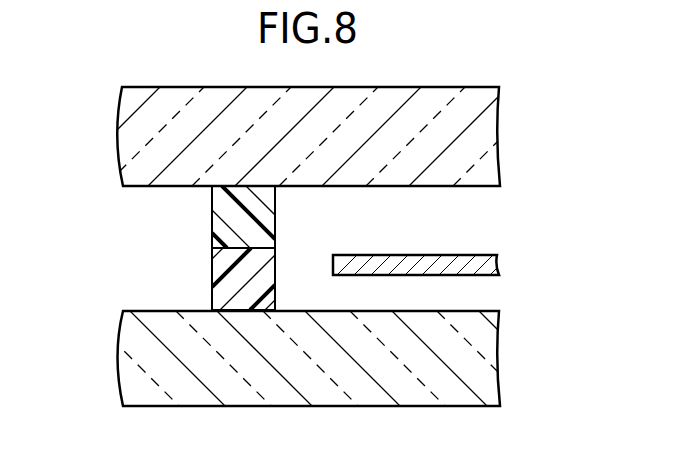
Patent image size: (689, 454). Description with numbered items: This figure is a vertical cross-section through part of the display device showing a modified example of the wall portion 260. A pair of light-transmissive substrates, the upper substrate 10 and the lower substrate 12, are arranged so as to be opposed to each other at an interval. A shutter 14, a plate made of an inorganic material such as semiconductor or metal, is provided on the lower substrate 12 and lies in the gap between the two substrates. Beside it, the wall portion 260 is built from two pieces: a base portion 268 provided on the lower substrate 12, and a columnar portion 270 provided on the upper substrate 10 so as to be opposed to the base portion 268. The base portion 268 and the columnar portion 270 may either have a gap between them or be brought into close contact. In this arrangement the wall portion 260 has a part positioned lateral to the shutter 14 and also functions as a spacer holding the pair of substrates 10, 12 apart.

The upper substrate 10 is at (491, 132).
The lower substrate 12 is at (490, 352).
The shutter 14 is at (490, 263).
The wall portion 260 is at (151, 248).
The base portion 268 is at (212, 270).
The columnar portion 270 is at (212, 224).